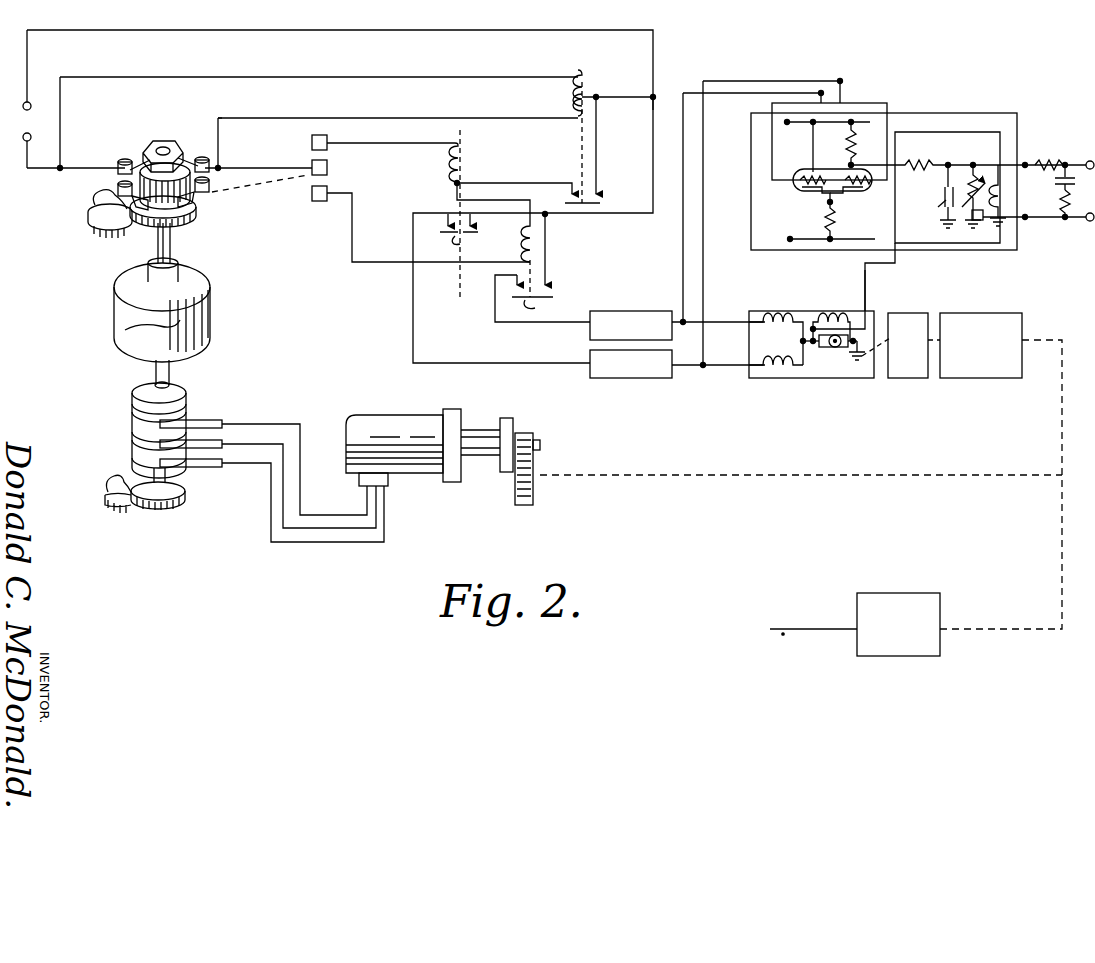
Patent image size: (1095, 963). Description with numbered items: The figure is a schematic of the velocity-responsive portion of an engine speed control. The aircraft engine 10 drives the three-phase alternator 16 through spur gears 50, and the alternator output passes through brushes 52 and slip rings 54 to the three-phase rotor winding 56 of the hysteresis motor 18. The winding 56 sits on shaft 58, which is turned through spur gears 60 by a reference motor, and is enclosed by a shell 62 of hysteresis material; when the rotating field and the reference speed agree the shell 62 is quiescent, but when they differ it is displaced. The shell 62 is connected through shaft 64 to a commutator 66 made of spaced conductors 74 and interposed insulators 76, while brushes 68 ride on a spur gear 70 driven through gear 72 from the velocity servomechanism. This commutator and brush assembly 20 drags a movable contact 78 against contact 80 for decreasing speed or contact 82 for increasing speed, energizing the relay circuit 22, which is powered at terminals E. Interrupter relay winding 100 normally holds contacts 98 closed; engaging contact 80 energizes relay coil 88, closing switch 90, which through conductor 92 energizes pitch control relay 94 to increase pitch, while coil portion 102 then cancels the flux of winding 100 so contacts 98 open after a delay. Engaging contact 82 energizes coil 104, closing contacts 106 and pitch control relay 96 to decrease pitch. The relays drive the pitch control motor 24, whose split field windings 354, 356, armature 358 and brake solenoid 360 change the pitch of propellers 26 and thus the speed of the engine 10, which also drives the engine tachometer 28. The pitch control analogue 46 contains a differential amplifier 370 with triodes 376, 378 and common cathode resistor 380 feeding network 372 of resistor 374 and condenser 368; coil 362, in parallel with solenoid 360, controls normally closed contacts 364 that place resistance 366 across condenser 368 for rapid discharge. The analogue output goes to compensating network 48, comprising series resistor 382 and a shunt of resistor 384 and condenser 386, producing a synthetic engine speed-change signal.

The aircraft engine 10 is at (978, 322).
The three-phase alternator 16 is at (365, 432).
The hysteresis motor 18 is at (116, 320).
The commutator and commutator brush assembly 20 is at (106, 123).
The relay circuit 22 is at (530, 63).
The pitch control motor 24 is at (856, 365).
The propellers 26 is at (902, 322).
The engine tachometer 28 is at (893, 652).
The pitch control analogue 46 is at (965, 122).
The compensating network 48 is at (1066, 158).
The spur gears 50 is at (535, 466).
The brushes 52 is at (202, 459).
The slip rings 54 is at (133, 420).
The three-phase rotor winding 56 is at (208, 320).
The shaft 58 is at (154, 372).
The spur gears 60 is at (112, 505).
The hysteresis motor shell 62 is at (195, 276).
The shaft 64 is at (156, 245).
The commutator 66 is at (158, 165).
The brushes 68 is at (120, 186).
The spur gear 70 is at (188, 210).
The gear 72 is at (95, 222).
The spaced conductors 74 is at (178, 160).
The spaced insulators 76 is at (172, 145).
The movable contact 78 is at (327, 167).
The contact 80 is at (327, 142).
The contact 82 is at (324, 201).
The relay coil 88 is at (466, 156).
The switch 90 is at (460, 242).
The conductor 92 is at (653, 116).
The pitch control relay 94 is at (590, 370).
The pitch control relay 96 is at (590, 333).
The contacts 98 is at (598, 192).
The interrupter relay winding 100 is at (586, 92).
The coil portion 102 is at (575, 103).
The coil 104 is at (540, 250).
The contacts 106 is at (538, 306).
The split field winding 354 is at (773, 315).
The split field winding 356 is at (775, 370).
The armature 358 is at (830, 349).
The deactuating solenoid 360 is at (826, 316).
The coil 362 is at (1006, 190).
The normally closed contacts 364 is at (985, 222).
The resistance 366 is at (985, 170).
The condenser 368 is at (945, 210).
The differential amplifier 370 is at (845, 155).
The network 372 is at (938, 154).
The resistor 374 is at (933, 170).
The triode 376 is at (800, 192).
The triode 378 is at (852, 192).
The common cathode resistor 380 is at (830, 222).
The series resistor 382 is at (1050, 158).
The resistor 384 is at (1062, 220).
The condenser 386 is at (1072, 190).